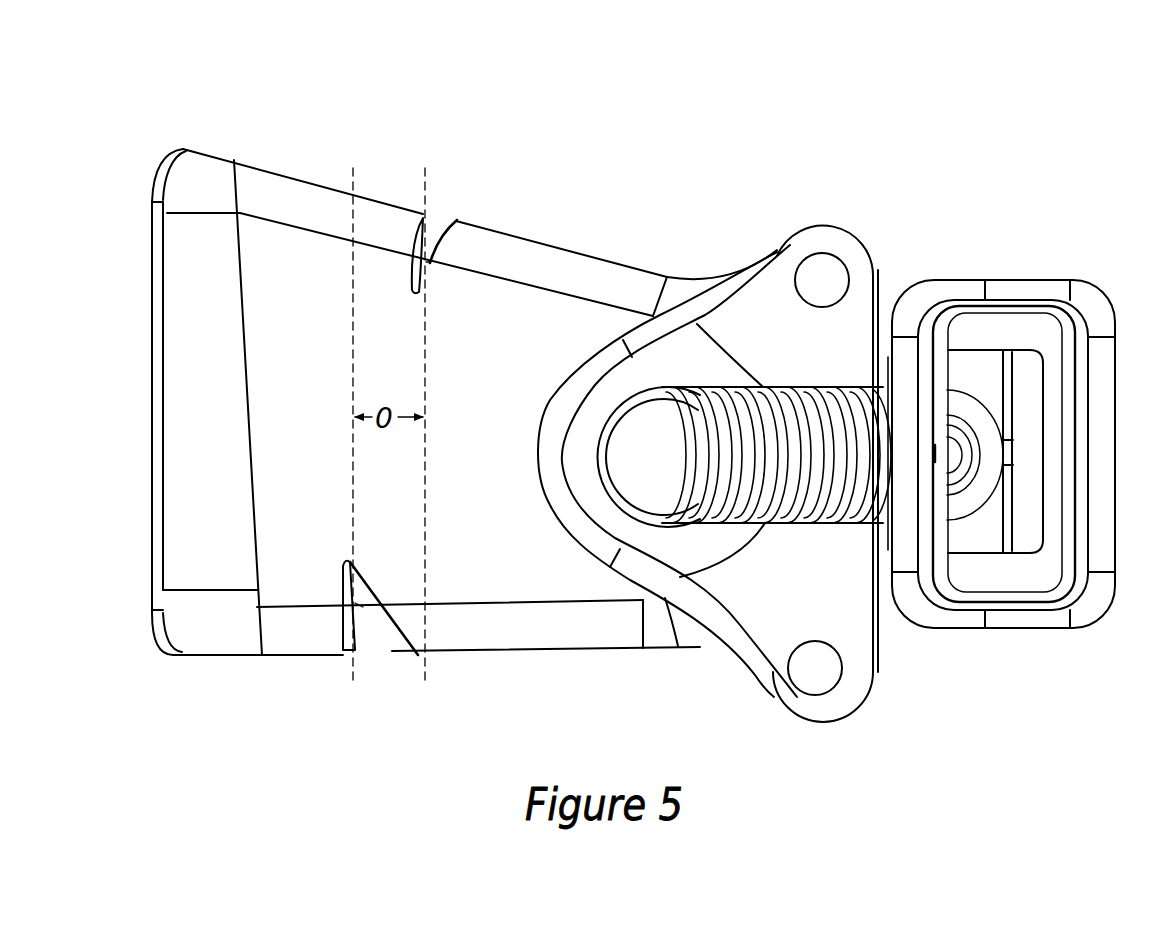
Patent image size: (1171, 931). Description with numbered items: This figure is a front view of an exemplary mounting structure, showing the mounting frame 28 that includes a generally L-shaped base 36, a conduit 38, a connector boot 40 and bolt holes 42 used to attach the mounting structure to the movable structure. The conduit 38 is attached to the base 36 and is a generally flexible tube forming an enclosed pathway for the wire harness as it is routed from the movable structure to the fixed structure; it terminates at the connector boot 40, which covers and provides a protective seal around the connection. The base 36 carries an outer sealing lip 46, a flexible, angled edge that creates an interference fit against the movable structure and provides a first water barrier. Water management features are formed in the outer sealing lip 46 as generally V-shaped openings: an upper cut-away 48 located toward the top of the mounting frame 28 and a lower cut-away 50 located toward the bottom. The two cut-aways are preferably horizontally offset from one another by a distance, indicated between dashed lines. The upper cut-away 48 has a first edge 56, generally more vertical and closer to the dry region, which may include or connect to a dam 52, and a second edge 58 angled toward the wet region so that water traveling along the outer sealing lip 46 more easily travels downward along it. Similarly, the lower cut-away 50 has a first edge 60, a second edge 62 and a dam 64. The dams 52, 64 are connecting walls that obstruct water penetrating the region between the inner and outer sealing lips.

The mounting frame 28 is at (610, 140).
The base 36 is at (504, 466).
The conduit 38 is at (810, 527).
The connector boot 40 is at (1020, 280).
The bolt holes 42 is at (813, 270).
The outer sealing lip 46 is at (263, 195).
The upper cut-away 48 is at (438, 218).
The lower cut-away 50 is at (367, 637).
The dam 52 is at (431, 262).
The first edge 56 is at (415, 243).
The second edge 58 is at (437, 238).
The first edge 60 is at (343, 595).
The second edge 62 is at (375, 630).
The dam 64 is at (363, 605).